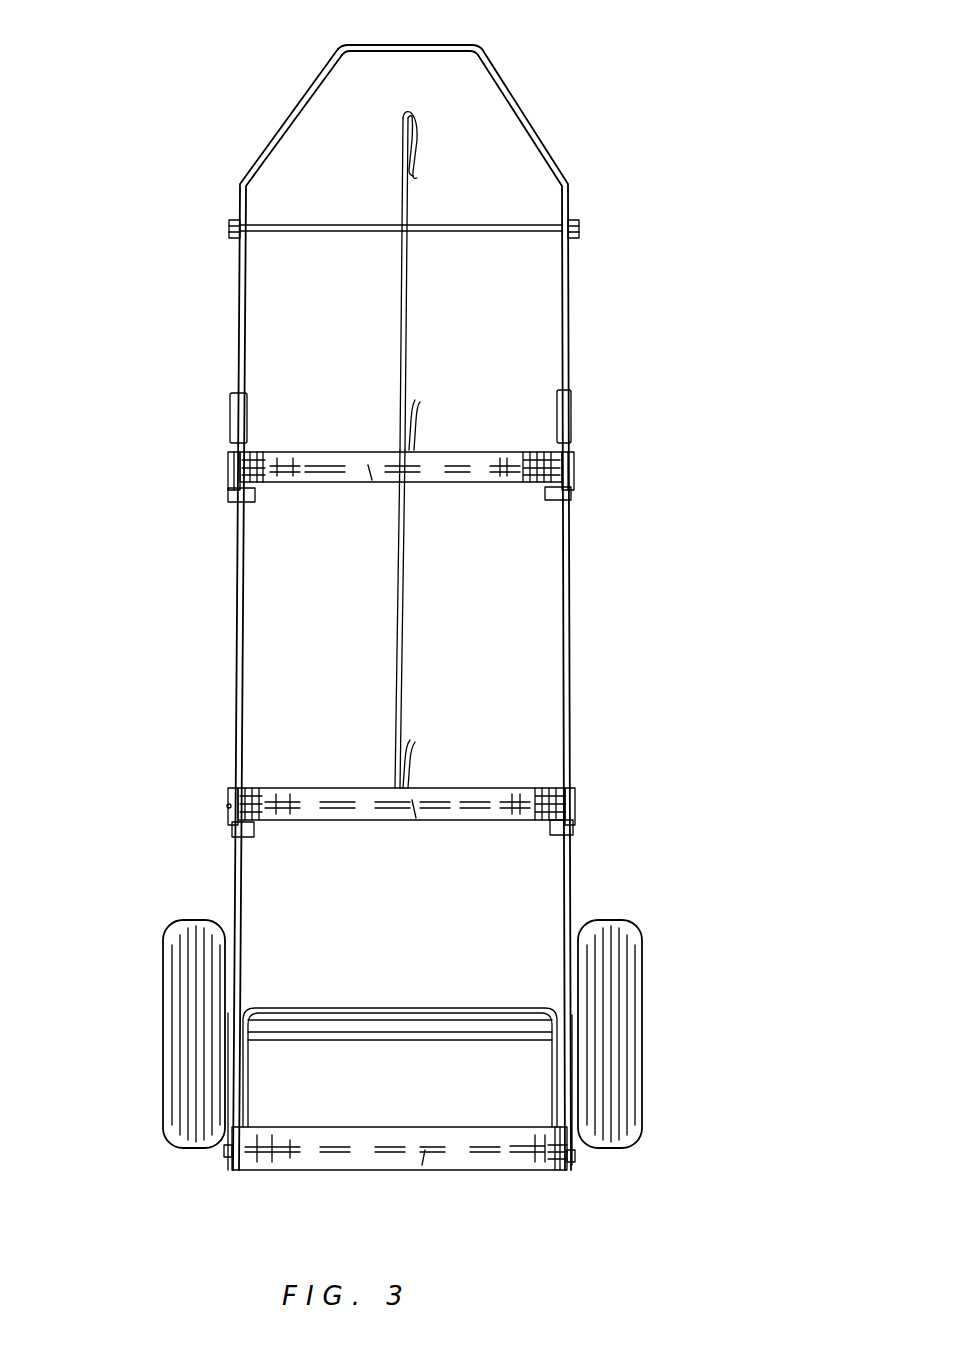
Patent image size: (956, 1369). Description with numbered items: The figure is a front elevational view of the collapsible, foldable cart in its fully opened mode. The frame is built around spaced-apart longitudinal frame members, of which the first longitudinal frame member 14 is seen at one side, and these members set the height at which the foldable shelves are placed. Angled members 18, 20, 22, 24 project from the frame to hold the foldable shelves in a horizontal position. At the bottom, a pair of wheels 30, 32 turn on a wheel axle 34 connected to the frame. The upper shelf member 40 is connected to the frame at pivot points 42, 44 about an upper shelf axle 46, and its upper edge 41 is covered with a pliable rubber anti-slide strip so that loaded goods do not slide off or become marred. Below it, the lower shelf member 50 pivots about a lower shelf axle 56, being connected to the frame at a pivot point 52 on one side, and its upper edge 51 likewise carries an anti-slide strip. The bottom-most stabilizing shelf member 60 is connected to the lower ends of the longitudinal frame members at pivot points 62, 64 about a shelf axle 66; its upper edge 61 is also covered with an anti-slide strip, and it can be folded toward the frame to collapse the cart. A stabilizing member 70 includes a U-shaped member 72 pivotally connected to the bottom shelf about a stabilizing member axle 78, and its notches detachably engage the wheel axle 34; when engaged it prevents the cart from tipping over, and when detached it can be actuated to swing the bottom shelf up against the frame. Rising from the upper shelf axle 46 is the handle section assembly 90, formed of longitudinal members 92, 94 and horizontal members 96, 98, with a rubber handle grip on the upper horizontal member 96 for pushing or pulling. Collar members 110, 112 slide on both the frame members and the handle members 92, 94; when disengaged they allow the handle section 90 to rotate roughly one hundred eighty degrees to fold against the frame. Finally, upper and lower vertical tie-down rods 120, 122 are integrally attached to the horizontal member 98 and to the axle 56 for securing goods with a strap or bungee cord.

The first longitudinal frame member 14 is at (236, 614).
The angled member 18 is at (247, 500).
The angled member 20 is at (255, 836).
The angled member 22 is at (565, 494).
The angled member 24 is at (552, 834).
The wheel 30 is at (190, 918).
The wheel 32 is at (600, 935).
The wheel axle 34 is at (385, 1036).
The upper shelf member 40 is at (303, 462).
The upper edge 41 is at (480, 464).
The pivot point 42 is at (230, 470).
The pivot point 44 is at (565, 462).
The upper shelf axle 46 is at (370, 484).
The lower shelf member 50 is at (316, 786).
The upper edge 51 is at (462, 788).
The pivot point 52 is at (230, 806).
The lower shelf axle 56 is at (415, 822).
The bottom-most stabilizing shelf member 60 is at (300, 1170).
The upper edge 61 is at (305, 1126).
The pivot point 62 is at (222, 1150).
The pivot point 64 is at (578, 1160).
The shelf axle 66 is at (515, 1162).
The stabilizing member 70 is at (352, 932).
The U-shaped member 72 is at (385, 1008).
The stabilizing member axle 78 is at (425, 1166).
The handle section assembly 90 is at (596, 243).
The longitudinal member 92 is at (266, 130).
The longitudinal member 94 is at (510, 92).
The upper horizontal member 96 is at (380, 40).
The horizontal member 98 is at (320, 222).
The collar member 110 is at (236, 411).
The collar member 112 is at (572, 400).
The upper vertical tie-down rod 120 is at (400, 278).
The lower vertical tie-down rod 122 is at (400, 578).